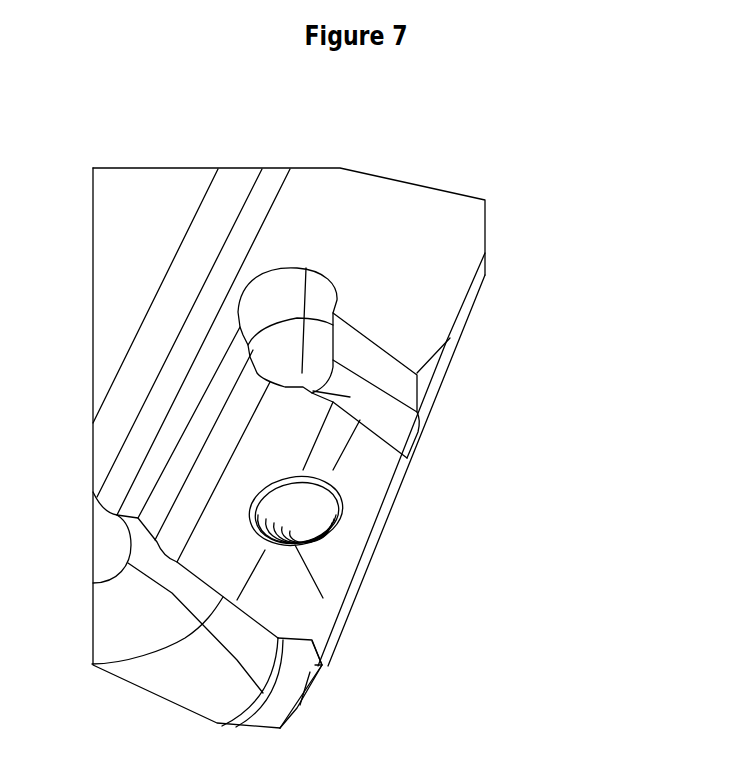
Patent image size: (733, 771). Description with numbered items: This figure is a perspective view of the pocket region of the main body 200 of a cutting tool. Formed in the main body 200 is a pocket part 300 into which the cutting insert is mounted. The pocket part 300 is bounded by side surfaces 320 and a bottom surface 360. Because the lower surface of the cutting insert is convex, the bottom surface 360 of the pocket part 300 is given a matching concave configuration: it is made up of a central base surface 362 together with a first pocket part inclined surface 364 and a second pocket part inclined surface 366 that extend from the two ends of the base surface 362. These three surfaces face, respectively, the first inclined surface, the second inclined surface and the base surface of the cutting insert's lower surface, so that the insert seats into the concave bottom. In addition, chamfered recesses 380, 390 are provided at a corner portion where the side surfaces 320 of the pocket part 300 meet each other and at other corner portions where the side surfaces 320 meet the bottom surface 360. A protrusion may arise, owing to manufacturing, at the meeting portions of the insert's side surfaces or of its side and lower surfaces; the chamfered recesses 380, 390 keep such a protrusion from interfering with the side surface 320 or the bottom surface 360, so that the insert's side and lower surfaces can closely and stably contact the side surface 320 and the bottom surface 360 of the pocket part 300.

The main body 200 is at (526, 244).
The pocket part 300 is at (632, 453).
The side surface 320 is at (403, 388).
The bottom surface 360 is at (405, 504).
The base surface 362 is at (288, 446).
The first pocket part inclined surface 364 is at (330, 466).
The second pocket part inclined surface 366 is at (343, 533).
The chamfered recess 380 is at (210, 473).
The chamfered recess 390 is at (275, 302).